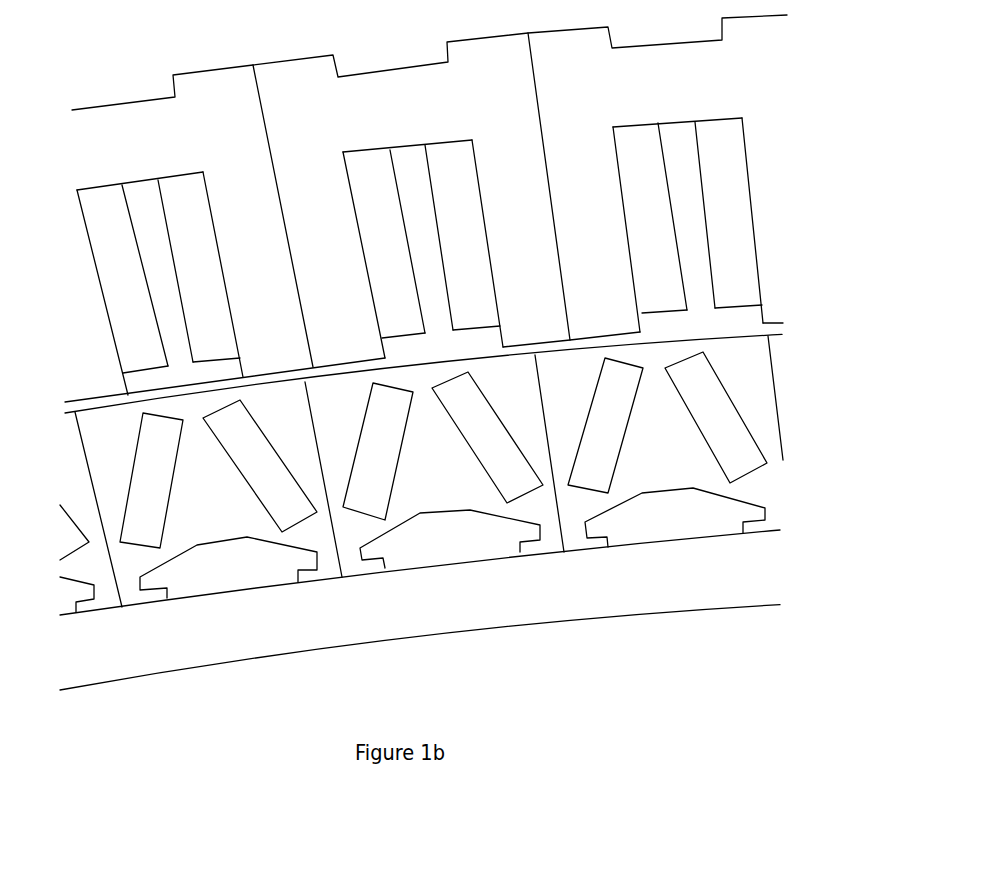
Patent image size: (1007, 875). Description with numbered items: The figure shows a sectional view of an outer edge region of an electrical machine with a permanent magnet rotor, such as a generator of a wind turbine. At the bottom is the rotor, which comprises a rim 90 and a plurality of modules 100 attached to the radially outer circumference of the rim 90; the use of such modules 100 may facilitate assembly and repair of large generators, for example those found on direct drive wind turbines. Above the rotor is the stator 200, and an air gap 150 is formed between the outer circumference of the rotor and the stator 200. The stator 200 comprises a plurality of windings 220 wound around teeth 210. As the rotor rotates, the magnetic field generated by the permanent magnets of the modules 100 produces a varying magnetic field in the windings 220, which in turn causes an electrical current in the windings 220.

The stator 200 is at (110, 148).
The teeth 210 is at (327, 223).
The windings 220 is at (380, 200).
The air gap 150 is at (113, 400).
The modules 100 is at (203, 518).
The rim 90 is at (440, 608).